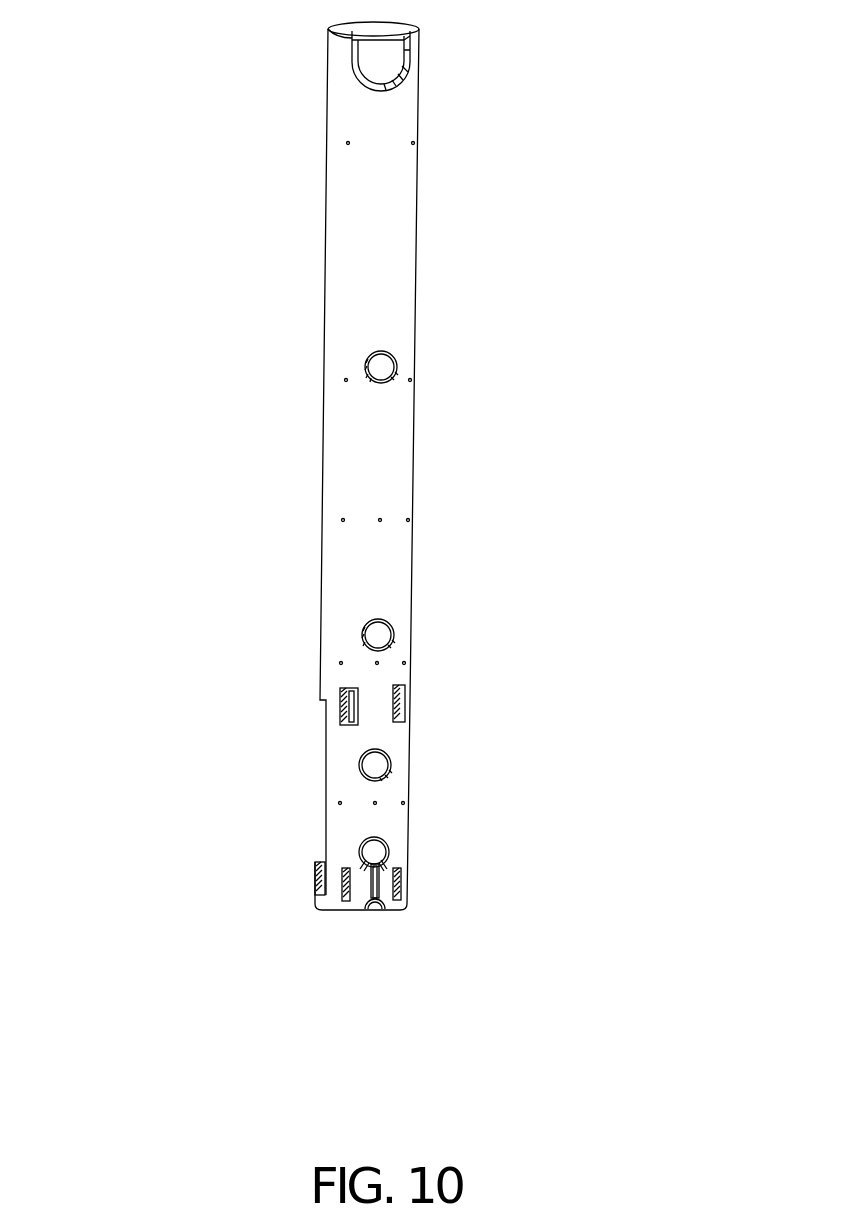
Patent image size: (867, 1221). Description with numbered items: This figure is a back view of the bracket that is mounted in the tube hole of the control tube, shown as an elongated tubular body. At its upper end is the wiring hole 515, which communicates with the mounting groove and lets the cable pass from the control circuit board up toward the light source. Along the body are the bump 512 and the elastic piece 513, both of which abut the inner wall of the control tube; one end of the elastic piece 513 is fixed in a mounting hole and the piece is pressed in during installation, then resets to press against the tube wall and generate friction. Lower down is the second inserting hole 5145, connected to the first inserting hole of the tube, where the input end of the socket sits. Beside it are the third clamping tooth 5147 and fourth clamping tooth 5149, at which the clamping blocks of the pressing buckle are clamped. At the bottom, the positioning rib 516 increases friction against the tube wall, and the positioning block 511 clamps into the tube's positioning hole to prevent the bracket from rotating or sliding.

The positioning block 511 is at (380, 902).
The bump 512 is at (383, 143).
The elastic piece 513 is at (383, 356).
The wiring hole 515 is at (375, 65).
The positioning rib 516 is at (322, 886).
The second inserting hole 5145 is at (375, 765).
The third clamping tooth 5147 is at (403, 692).
The fourth clamping tooth 5149 is at (334, 710).